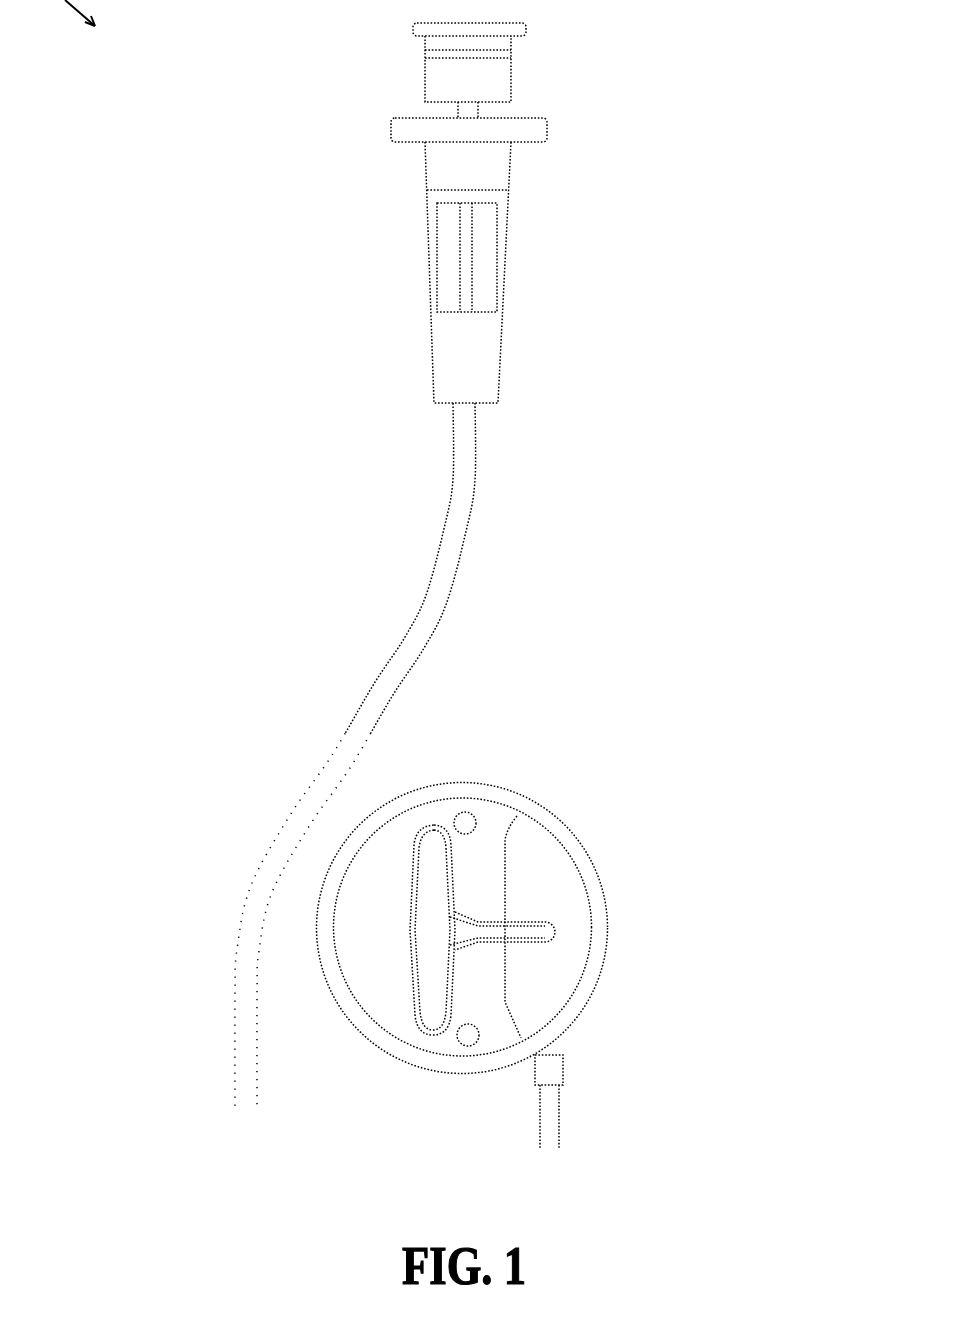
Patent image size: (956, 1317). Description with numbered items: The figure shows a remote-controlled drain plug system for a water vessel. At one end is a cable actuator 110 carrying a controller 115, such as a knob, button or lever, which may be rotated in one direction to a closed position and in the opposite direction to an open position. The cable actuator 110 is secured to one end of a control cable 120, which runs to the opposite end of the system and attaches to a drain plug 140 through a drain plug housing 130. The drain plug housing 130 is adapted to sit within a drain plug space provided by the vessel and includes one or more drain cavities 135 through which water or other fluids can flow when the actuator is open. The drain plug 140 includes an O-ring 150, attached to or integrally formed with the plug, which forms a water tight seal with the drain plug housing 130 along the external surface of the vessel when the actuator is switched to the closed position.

The cable actuator 110 is at (592, 858).
The controller 115 is at (433, 823).
The control cable 120 is at (402, 645).
The drain plug housing 130 is at (427, 260).
The drain cavities 135 is at (440, 300).
The drain plug 140 is at (510, 74).
The O-ring 150 is at (425, 52).